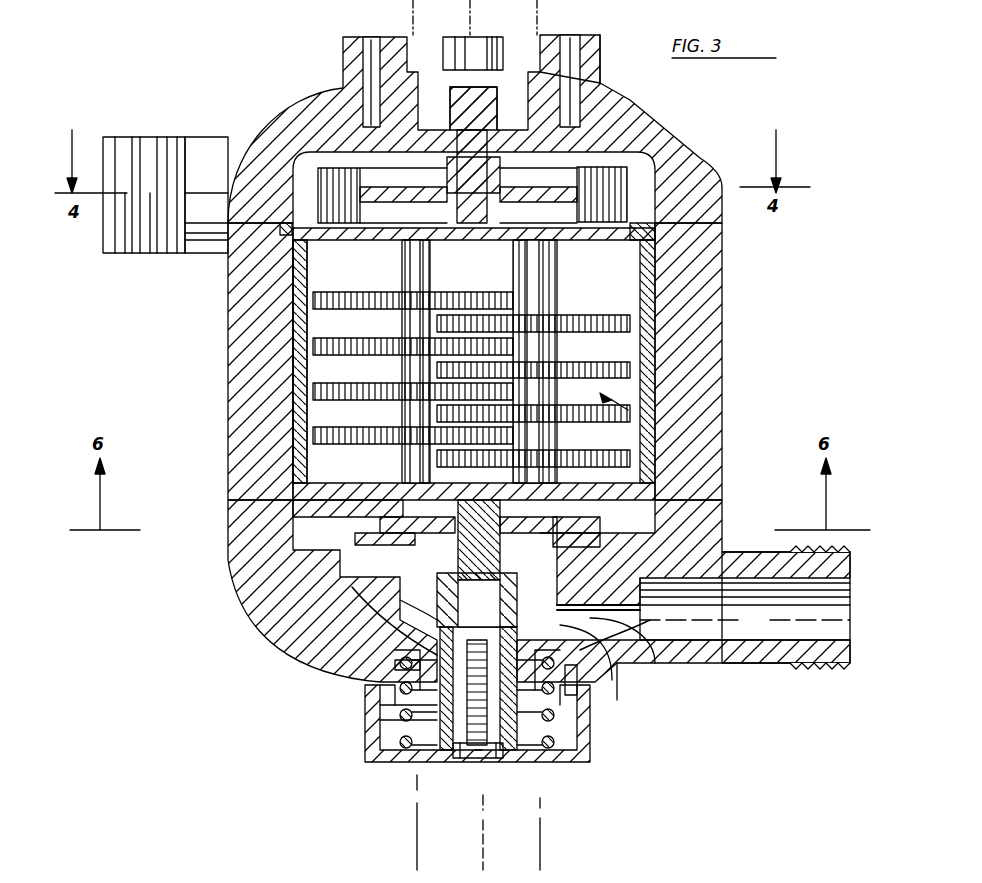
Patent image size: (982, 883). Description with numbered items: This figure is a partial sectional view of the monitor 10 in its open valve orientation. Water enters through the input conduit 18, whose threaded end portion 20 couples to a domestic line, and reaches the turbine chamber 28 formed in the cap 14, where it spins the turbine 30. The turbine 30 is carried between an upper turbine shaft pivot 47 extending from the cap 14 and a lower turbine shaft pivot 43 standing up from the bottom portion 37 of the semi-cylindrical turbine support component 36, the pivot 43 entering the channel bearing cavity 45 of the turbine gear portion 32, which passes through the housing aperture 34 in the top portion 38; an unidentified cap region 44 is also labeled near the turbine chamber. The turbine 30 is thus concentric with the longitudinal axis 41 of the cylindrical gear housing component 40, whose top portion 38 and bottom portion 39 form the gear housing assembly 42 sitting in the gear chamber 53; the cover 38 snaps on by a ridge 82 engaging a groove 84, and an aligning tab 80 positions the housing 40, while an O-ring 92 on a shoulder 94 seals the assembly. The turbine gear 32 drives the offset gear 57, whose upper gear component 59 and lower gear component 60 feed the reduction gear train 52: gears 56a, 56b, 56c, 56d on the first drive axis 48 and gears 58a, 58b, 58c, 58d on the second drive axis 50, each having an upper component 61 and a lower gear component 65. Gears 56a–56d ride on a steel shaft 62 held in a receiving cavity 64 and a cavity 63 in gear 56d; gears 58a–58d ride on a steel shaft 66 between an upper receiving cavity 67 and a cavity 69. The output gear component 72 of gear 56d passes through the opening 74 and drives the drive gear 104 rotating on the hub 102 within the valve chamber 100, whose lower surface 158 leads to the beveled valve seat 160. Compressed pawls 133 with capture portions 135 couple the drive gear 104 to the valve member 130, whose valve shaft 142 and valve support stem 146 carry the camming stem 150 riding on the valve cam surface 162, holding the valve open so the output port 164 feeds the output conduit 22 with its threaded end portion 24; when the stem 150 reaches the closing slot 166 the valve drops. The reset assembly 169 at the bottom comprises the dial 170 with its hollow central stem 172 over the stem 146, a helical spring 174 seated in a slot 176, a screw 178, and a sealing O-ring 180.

The monitor 10 is at (818, 142).
The cap portion 14 is at (640, 125).
The input conduit 18 is at (205, 145).
The threaded end portion 20 is at (165, 150).
The output conduit 22 is at (728, 665).
The threaded end portion 24 is at (806, 666).
The turbine chamber 28 is at (400, 230).
The turbine 30 is at (370, 195).
The turbine gear portion 32 is at (300, 262).
The housing aperture 34 is at (610, 318).
The turbine support component 36 is at (300, 318).
The bottom portion 37 is at (300, 345).
The top portion 38 is at (640, 215).
The bottom portion 39 is at (320, 510).
The gear housing component 40 is at (722, 393).
The longitudinal axis 41 is at (482, 853).
The gear housing assembly 42 is at (295, 402).
The lower turbine shaft pivot 43 is at (300, 255).
The cap 44 is at (590, 108).
The channel bearing cavity 45 is at (485, 230).
The upper turbine shaft pivot 47 is at (565, 82).
The first drive axis 48 is at (542, 848).
The second drive axis 50 is at (415, 843).
The reduction gear train 52 is at (650, 400).
The gear chamber 53 is at (680, 262).
The gear 56a is at (600, 326).
The gear 56b is at (600, 372).
The gear 56c is at (600, 415).
The gear 56d is at (600, 460).
The offset gear 57 is at (562, 267).
The gear 58a is at (320, 300).
The gear 58b is at (320, 347).
The gear 58c is at (320, 392).
The gear 58d is at (320, 436).
The upper gear component 59 is at (620, 300).
The lower gear component 60 is at (620, 340).
The upper component 61 is at (630, 348).
The steel shaft 62 is at (645, 250).
The cavity 63 is at (640, 508).
The receiving cavity 64 is at (505, 215).
The lower gear component 65 is at (625, 395).
The steel shaft 66 is at (400, 215).
The upper receiving cavity 67 is at (455, 250).
The cavity 69 is at (330, 470).
The output gear component 72 is at (650, 560).
The opening 74 is at (660, 522).
The aligning tab 80 is at (660, 540).
The ridge 82 is at (680, 282).
The groove 84 is at (300, 300).
The O-ring 92 is at (290, 225).
The shoulder 94 is at (270, 212).
The valve chamber 100 is at (350, 560).
The hub 102 is at (537, 557).
The drive gear 104 is at (330, 540).
The valve member 130 is at (415, 635).
The pawls 133 is at (368, 550).
The capture portion 135 is at (645, 600).
The valve shaft 142 is at (400, 625).
The valve support stem 146 is at (455, 735).
The camming stem 150 is at (512, 612).
The lower surface 158 is at (360, 590).
The beveled valve seat 160 is at (512, 592).
The valve cam surface 162 is at (400, 665).
The output port 164 is at (640, 645).
The closing slot 166 is at (590, 660).
The reset assembly 169 is at (335, 752).
The dial 170 is at (578, 760).
The hollow central stem 172 is at (548, 725).
The helical spring 174 is at (543, 758).
The slot 176 is at (398, 705).
The screw 178 is at (481, 760).
The O-ring 180 is at (572, 692).